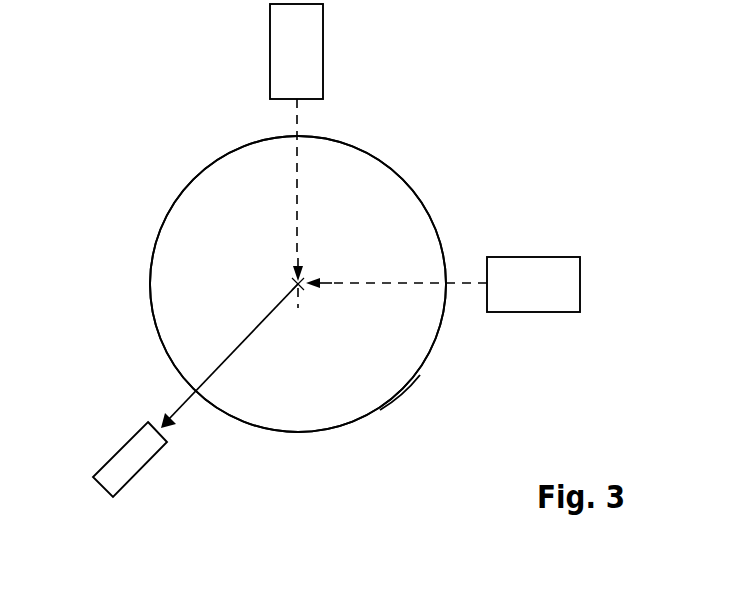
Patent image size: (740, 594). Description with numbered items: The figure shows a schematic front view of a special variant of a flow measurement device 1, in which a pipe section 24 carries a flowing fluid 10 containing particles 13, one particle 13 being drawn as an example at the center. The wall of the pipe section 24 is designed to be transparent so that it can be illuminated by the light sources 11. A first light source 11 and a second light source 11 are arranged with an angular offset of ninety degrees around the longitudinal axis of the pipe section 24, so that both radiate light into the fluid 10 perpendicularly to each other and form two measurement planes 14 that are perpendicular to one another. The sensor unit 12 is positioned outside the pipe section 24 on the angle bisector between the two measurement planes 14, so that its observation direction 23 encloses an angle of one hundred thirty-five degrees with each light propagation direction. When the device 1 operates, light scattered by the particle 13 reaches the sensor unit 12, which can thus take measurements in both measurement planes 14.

The flow measurement device 1 is at (166, 122).
The fluid 10 is at (169, 252).
The light source 11 is at (323, 42).
The sensor unit 12 is at (118, 450).
The particle 13 is at (297, 283).
The measurement plane 14 is at (303, 266).
The observation direction 23 is at (187, 401).
The pipe section 24 is at (413, 380).